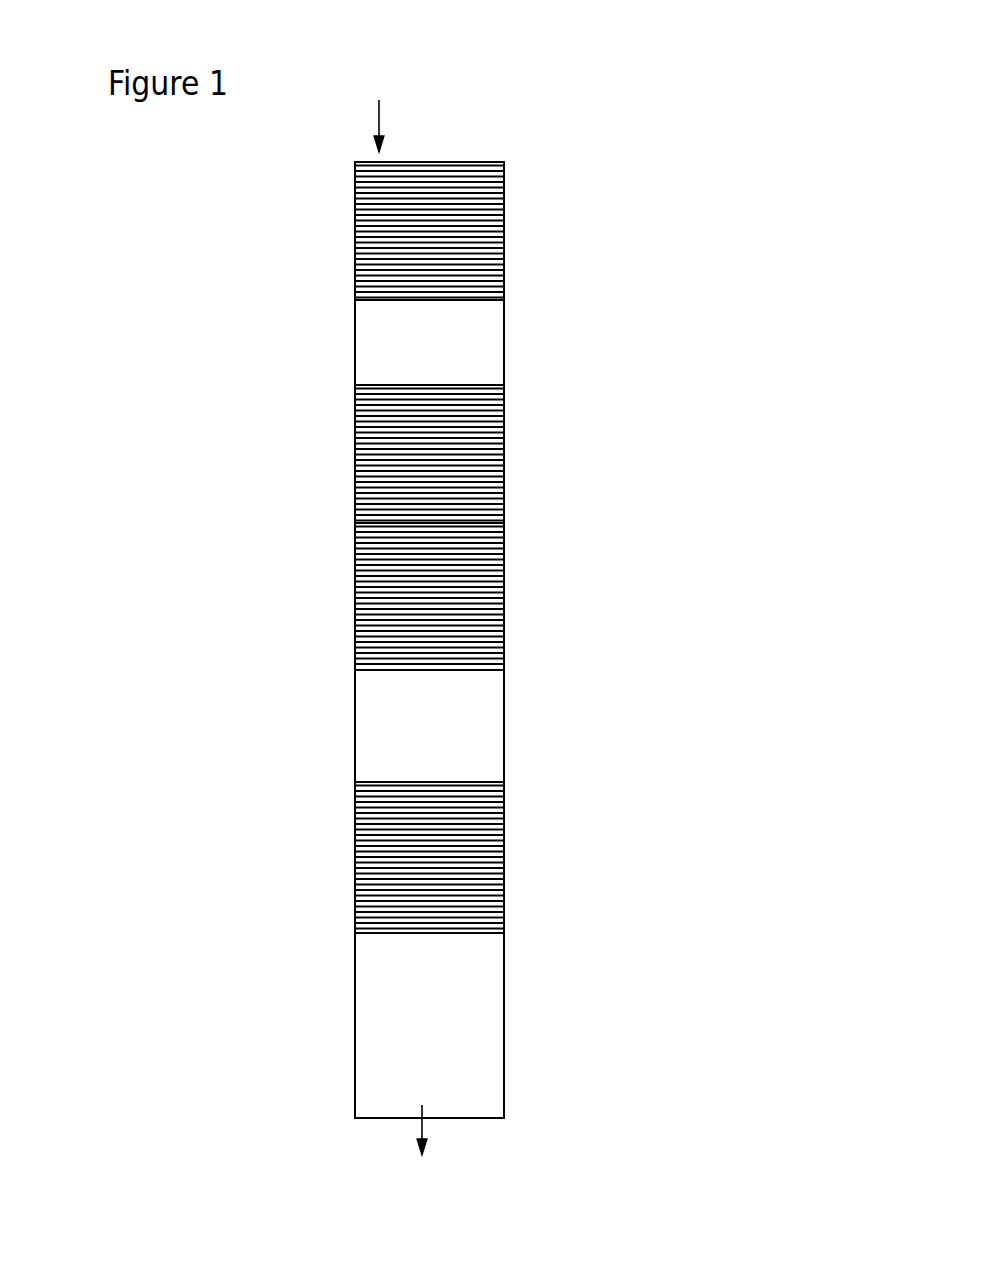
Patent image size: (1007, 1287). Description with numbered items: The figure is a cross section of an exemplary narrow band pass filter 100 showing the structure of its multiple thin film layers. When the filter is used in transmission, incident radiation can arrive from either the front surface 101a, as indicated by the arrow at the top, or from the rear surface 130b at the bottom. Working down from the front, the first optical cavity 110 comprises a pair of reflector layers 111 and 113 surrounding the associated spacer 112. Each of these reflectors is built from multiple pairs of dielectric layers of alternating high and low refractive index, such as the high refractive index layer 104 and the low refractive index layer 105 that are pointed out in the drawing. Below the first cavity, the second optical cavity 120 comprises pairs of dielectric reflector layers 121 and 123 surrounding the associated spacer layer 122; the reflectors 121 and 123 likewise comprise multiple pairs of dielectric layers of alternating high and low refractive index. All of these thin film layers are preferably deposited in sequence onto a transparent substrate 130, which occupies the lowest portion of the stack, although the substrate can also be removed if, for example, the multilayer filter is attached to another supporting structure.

The narrow band pass filter 100 is at (218, 645).
The front surface 101a is at (467, 145).
The high refractive index layer 104 is at (355, 410).
The low refractive index layer 105 is at (343, 422).
The first optical cavity 110 is at (753, 162).
The reflector layer 111 is at (590, 162).
The spacer 112 is at (553, 300).
The reflector layer 113 is at (517, 385).
The second optical cavity 120 is at (330, 523).
The dielectric reflector layer 121 is at (517, 523).
The spacer layer 122 is at (517, 670).
The dielectric reflector layer 123 is at (517, 782).
The transparent substrate 130 is at (518, 932).
The rear surface 130b is at (464, 1149).